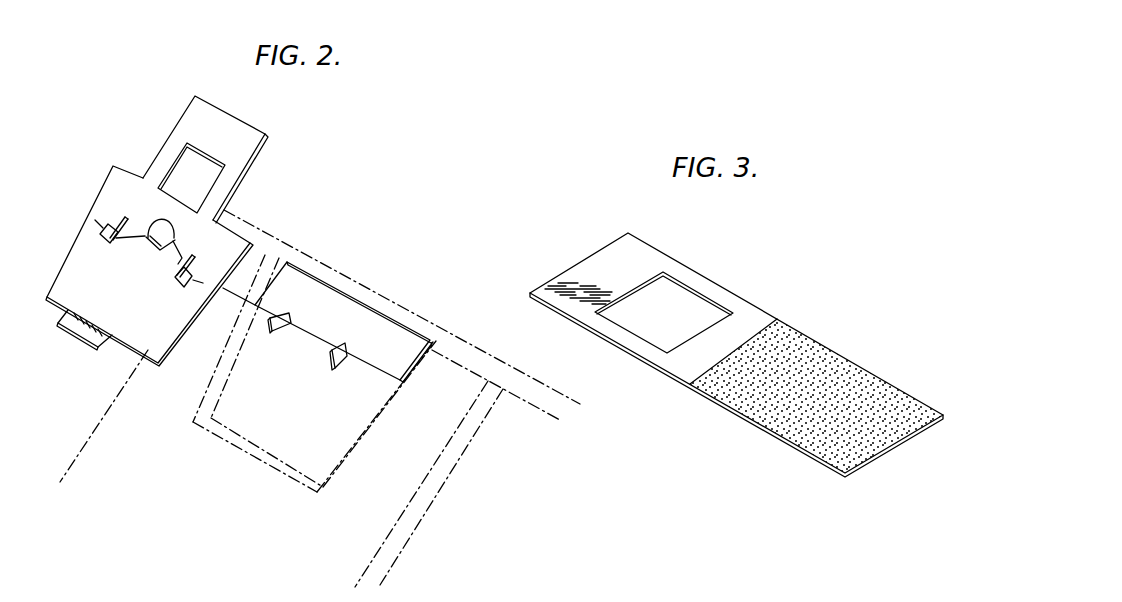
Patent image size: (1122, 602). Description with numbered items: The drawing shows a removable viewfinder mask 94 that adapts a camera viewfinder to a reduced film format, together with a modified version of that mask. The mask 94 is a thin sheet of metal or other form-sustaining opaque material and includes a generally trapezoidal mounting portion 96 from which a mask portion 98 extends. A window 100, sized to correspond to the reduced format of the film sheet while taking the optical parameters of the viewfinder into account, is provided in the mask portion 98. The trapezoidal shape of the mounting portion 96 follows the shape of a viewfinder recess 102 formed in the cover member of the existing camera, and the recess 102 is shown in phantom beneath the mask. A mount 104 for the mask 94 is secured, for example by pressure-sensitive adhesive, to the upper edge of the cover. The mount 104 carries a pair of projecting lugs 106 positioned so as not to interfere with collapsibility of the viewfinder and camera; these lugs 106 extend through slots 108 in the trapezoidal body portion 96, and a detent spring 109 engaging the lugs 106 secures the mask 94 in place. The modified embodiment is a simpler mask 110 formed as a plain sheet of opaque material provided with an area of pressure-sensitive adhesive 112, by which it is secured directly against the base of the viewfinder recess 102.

In FIG. 2, the removable viewfinder mask 94 is at (157, 116).
In FIG. 2, the trapezoidal mounting portion 96 is at (92, 252).
In FIG. 2, the mask portion 98 is at (238, 143).
In FIG. 2, the window 100 is at (190, 188).
In FIG. 2, the viewfinder recess 102 is at (386, 422).
In FIG. 2, the mount 104 is at (398, 345).
In FIG. 2, the projecting lugs 106 is at (330, 353).
In FIG. 2, the slots 108 is at (126, 216).
In FIG. 2, the detent spring 109 is at (170, 258).
In FIG. 3, the alternative mask 110 is at (632, 267).
In FIG. 3, the area of pressure-sensitive adhesive 112 is at (788, 360).